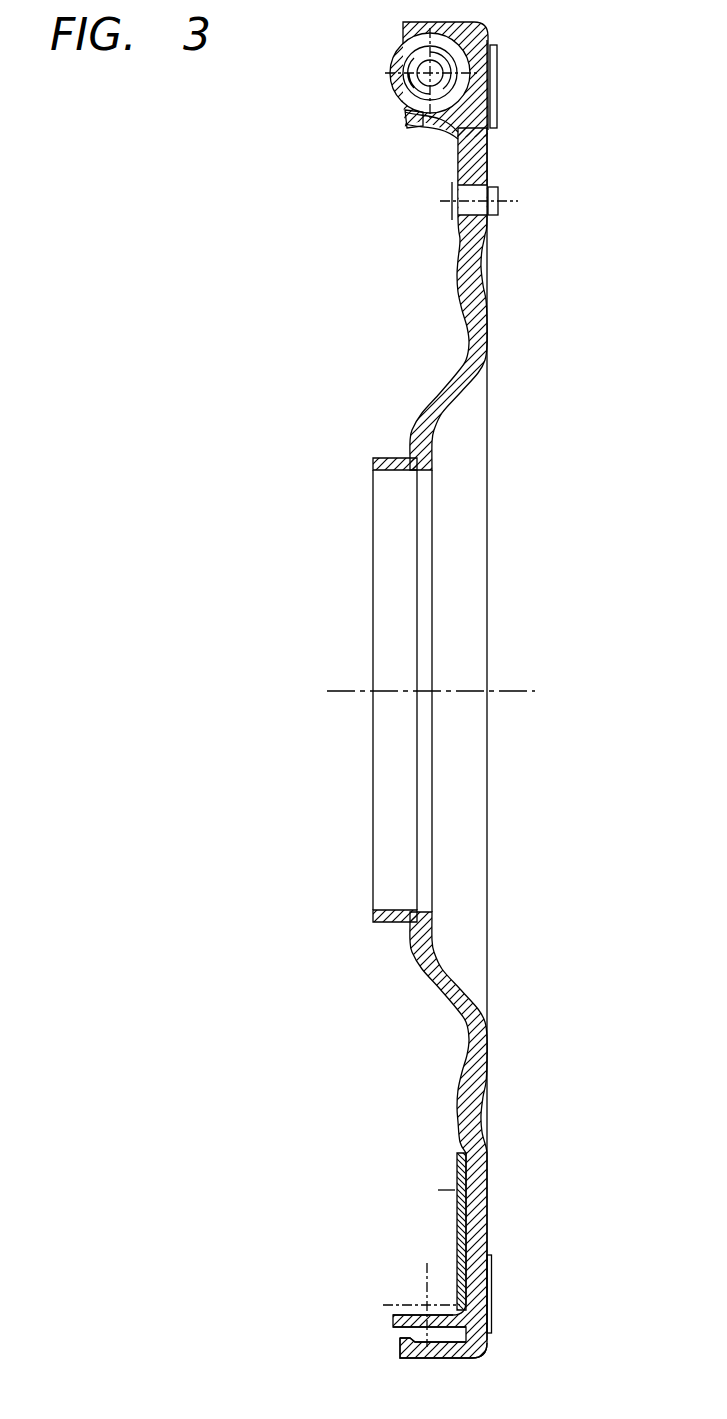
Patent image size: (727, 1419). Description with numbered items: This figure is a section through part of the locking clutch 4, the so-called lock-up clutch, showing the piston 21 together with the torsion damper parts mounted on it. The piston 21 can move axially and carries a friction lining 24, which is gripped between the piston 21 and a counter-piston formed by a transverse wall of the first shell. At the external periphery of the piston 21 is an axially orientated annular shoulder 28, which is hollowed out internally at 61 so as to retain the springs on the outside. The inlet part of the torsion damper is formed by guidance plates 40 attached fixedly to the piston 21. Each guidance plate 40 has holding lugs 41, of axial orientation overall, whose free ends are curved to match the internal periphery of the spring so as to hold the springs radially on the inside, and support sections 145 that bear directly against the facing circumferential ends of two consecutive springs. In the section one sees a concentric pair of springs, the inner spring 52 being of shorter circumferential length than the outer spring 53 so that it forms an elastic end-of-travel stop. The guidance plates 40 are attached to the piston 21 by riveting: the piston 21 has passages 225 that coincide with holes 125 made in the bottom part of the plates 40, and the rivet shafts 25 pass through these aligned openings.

The locking clutch 4 is at (434, 246).
The piston 21 is at (487, 1045).
The friction lining 24 is at (491, 1283).
The rivet shaft 25 is at (503, 202).
The hole 125 is at (503, 187).
The passage 225 is at (503, 216).
The annular shoulder 28 is at (400, 26).
The guidance plate 40 is at (457, 1232).
The holding lug 41 is at (408, 124).
The inner spring 52 is at (413, 97).
The spring 53 is at (392, 89).
The hollow 61 is at (497, 46).
The support section 145 is at (395, 1322).